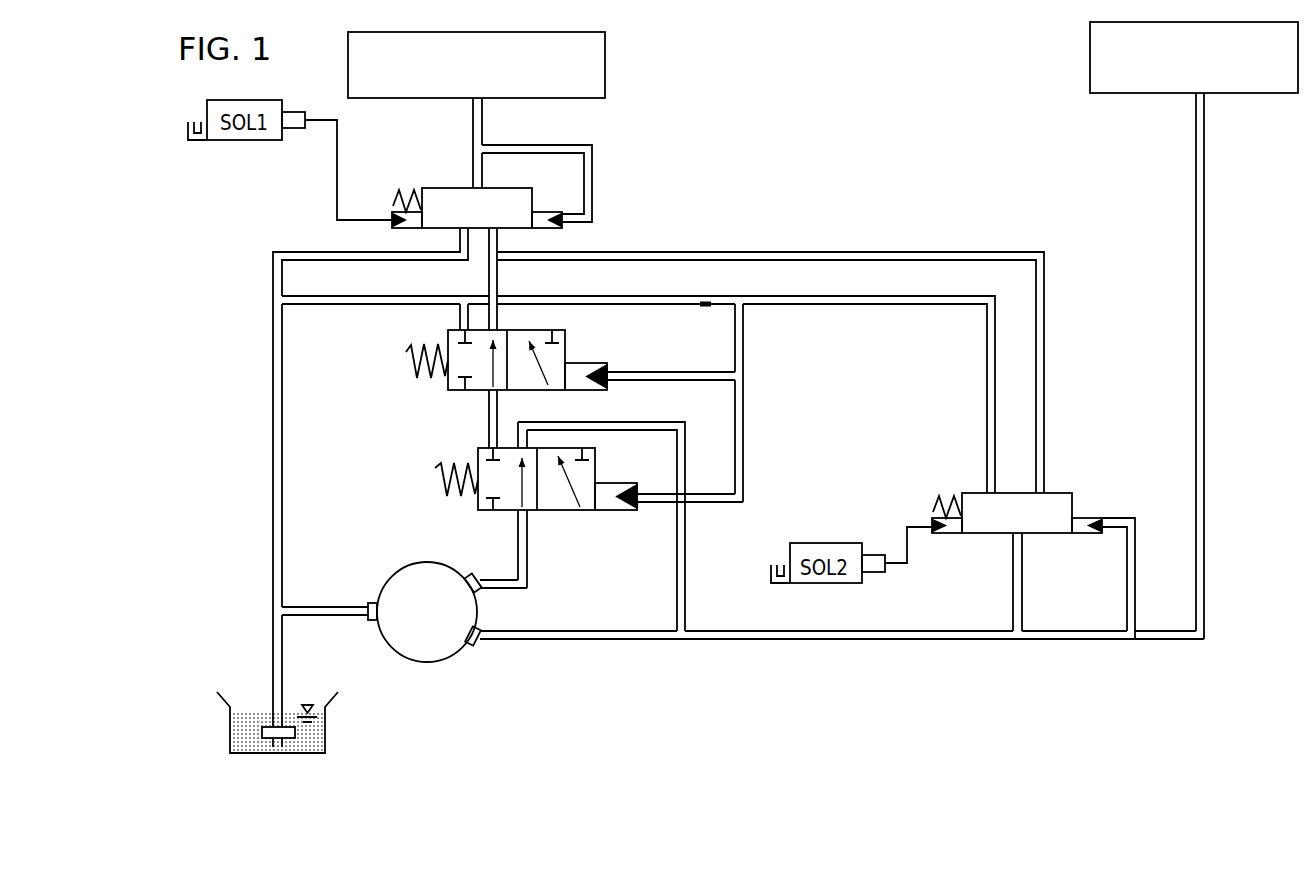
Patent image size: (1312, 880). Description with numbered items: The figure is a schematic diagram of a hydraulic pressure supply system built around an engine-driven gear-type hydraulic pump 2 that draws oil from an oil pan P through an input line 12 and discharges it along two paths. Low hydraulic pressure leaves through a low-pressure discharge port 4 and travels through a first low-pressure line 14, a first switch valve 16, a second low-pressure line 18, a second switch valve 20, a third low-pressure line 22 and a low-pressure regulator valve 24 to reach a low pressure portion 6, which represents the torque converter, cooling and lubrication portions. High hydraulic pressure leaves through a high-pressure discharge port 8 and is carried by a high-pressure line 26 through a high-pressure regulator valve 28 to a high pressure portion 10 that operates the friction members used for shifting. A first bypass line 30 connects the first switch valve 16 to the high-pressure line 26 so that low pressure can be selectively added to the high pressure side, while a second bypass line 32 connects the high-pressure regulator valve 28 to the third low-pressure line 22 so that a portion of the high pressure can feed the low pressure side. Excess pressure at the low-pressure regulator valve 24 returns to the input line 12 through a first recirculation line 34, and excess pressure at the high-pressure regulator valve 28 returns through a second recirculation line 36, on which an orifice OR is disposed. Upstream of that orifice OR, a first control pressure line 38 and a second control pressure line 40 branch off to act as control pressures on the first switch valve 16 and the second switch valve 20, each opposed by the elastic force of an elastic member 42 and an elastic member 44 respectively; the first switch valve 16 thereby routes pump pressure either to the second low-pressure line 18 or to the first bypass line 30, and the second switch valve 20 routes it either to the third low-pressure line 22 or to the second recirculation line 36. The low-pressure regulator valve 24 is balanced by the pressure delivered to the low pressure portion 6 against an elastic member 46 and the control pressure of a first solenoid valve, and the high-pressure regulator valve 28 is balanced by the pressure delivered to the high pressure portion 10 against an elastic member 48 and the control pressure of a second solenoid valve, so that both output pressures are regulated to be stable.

The hydraulic pump 2 is at (372, 578).
The low-pressure discharge port 4 is at (468, 575).
The low pressure portion 6 is at (605, 68).
The high-pressure discharge port 8 is at (470, 648).
The high pressure portion 10 is at (1090, 57).
The input line 12 is at (320, 617).
The first low-pressure line 14 is at (528, 545).
The first switch valve 16 is at (417, 485).
The second low-pressure line 18 is at (490, 420).
The second switch valve 20 is at (417, 385).
The third low-pressure line 22 is at (489, 272).
The low-pressure regulator valve 24 is at (417, 172).
The high-pressure line 26 is at (796, 639).
The high-pressure regulator valve 28 is at (1063, 487).
The first bypass line 30 is at (686, 536).
The second bypass line 32 is at (852, 252).
The first recirculation line 34 is at (272, 270).
The second recirculation line 36 is at (852, 304).
The first control pressure line 38 is at (483, 125).
The second control pressure line 40 is at (668, 372).
The elastic member 42 is at (435, 468).
The elastic member 44 is at (406, 352).
The elastic member 46 is at (396, 206).
The elastic member 48 is at (942, 508).
The orifice OR is at (708, 291).
The oil pan P is at (326, 722).